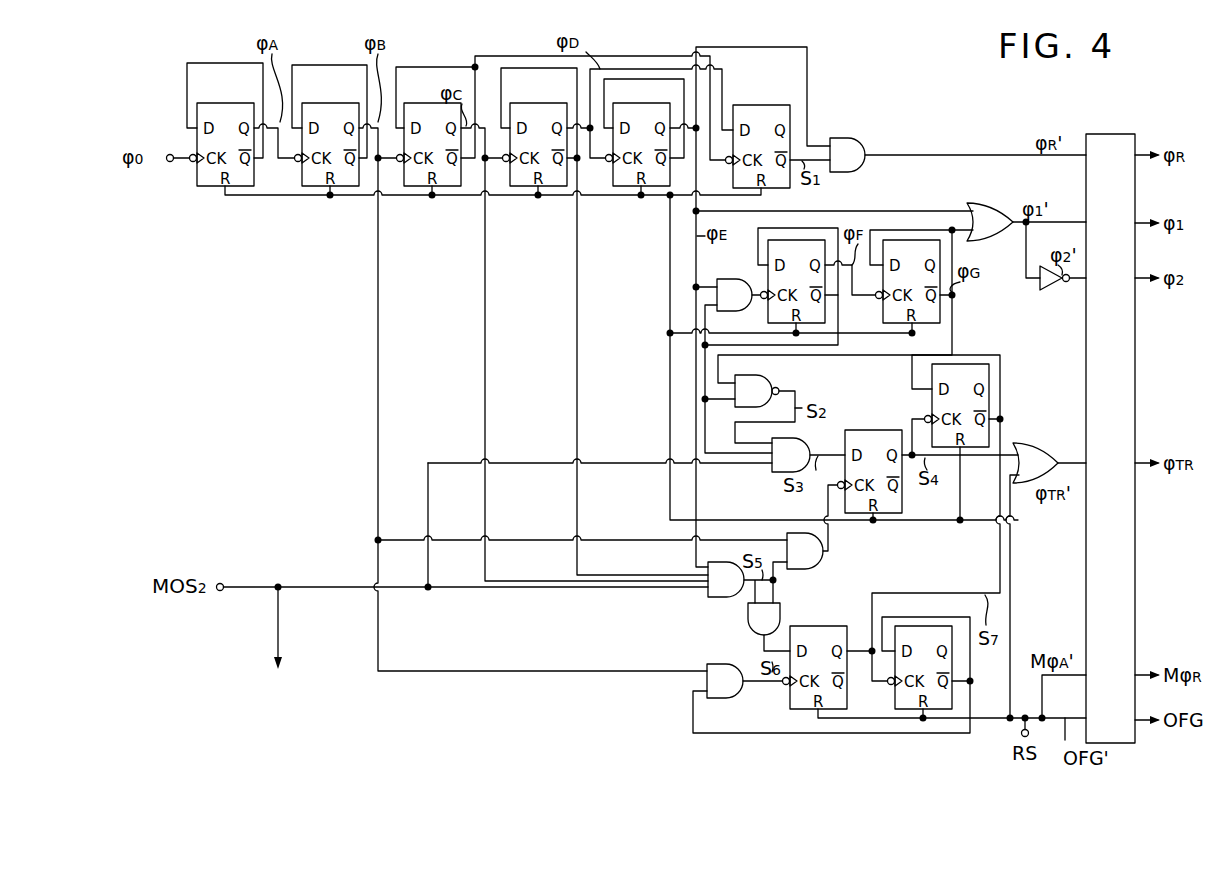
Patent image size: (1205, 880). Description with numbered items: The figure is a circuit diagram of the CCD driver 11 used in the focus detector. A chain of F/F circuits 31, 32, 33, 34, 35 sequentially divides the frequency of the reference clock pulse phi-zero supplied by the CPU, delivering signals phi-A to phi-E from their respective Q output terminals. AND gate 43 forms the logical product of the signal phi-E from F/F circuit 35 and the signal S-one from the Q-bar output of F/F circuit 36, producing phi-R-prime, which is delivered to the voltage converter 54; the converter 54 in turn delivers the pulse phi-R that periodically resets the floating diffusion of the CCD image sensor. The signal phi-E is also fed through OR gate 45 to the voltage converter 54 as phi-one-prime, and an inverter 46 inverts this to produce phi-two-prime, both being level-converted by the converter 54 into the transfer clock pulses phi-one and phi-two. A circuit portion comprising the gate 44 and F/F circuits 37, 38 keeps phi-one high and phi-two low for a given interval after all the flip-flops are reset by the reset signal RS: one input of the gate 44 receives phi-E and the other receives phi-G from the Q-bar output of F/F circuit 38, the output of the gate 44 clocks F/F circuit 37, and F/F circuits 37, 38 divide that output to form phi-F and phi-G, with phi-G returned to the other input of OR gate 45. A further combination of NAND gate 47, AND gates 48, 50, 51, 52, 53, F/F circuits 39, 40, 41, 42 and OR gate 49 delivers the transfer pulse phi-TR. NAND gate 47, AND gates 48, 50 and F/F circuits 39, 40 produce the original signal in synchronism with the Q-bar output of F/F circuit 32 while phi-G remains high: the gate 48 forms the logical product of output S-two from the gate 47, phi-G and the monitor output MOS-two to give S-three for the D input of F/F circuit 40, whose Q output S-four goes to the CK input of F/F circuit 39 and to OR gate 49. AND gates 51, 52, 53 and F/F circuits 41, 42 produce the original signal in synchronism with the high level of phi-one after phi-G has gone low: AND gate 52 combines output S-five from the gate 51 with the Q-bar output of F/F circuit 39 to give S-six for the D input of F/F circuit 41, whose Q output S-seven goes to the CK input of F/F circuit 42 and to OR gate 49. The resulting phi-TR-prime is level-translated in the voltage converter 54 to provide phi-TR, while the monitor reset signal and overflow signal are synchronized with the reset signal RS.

The CCD driver 11 is at (901, 106).
The F/F circuit 31 is at (232, 112).
The F/F circuit 32 is at (336, 112).
The F/F circuit 33 is at (420, 107).
The F/F circuit 34 is at (544, 112).
The F/F circuit 35 is at (648, 112).
The F/F circuit 36 is at (756, 114).
The F/F circuit 37 is at (770, 324).
The F/F circuit 38 is at (883, 322).
The F/F circuit 39 is at (927, 402).
The F/F circuit 40 is at (902, 505).
The F/F circuit 41 is at (826, 626).
The F/F circuit 42 is at (892, 700).
The AND gate 43 is at (836, 138).
The gate 44 is at (731, 286).
The OR gate 45 is at (998, 210).
The inverter 46 is at (1052, 286).
The NAND gate 47 is at (762, 397).
The AND gate 48 is at (806, 456).
The OR gate 49 is at (1034, 456).
The AND gate 50 is at (822, 565).
The AND gate 51 is at (738, 596).
The AND gate 52 is at (760, 638).
The AND gate 53 is at (724, 698).
The voltage converter 54 is at (1120, 133).